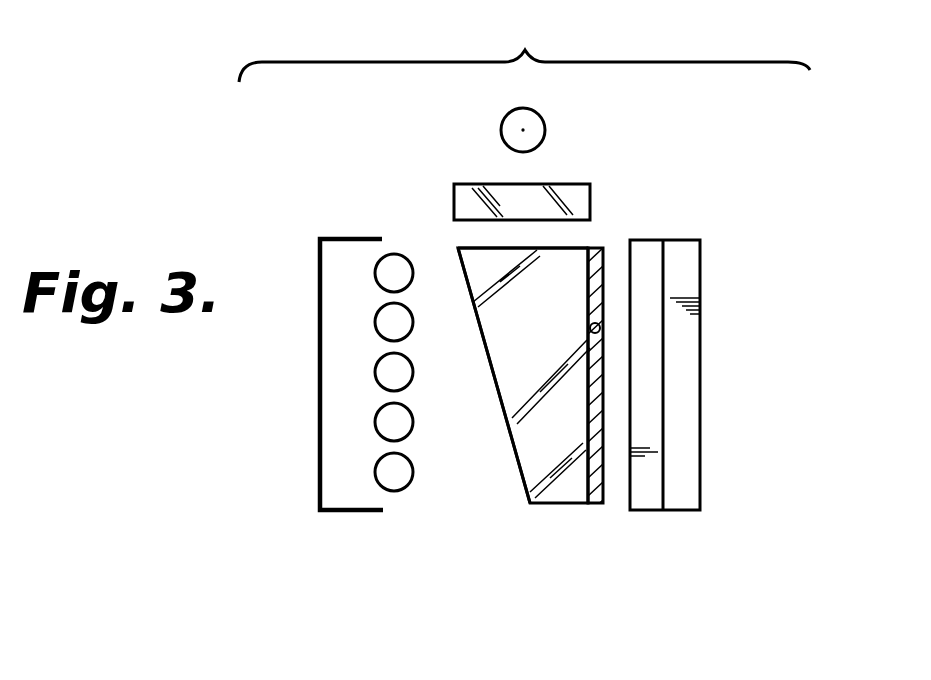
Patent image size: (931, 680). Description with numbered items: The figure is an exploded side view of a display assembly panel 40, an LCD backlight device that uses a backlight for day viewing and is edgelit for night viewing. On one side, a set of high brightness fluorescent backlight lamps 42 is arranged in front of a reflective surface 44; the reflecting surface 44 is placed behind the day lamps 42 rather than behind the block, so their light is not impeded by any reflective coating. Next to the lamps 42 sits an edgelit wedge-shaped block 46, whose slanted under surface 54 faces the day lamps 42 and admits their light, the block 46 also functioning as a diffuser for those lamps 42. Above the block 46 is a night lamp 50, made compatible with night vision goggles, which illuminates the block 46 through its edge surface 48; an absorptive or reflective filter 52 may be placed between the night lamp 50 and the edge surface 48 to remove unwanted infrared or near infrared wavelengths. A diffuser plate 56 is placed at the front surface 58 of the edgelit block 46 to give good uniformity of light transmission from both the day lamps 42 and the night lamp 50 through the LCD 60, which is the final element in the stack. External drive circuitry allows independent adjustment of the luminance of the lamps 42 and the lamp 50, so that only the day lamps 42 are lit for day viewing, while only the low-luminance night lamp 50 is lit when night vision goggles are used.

The display assembly panel 40 is at (524, 42).
The fluorescent backlight 42 is at (402, 510).
The reflective surface 44 is at (296, 416).
The wedge-shaped block 46 is at (519, 522).
The edge surface 48 is at (468, 243).
The night lamp 50 is at (482, 107).
The filter 52 is at (612, 178).
The under surface 54 is at (493, 386).
The diffuser plate 56 is at (618, 528).
The front surface 58 is at (590, 328).
The LCD 60 is at (724, 380).